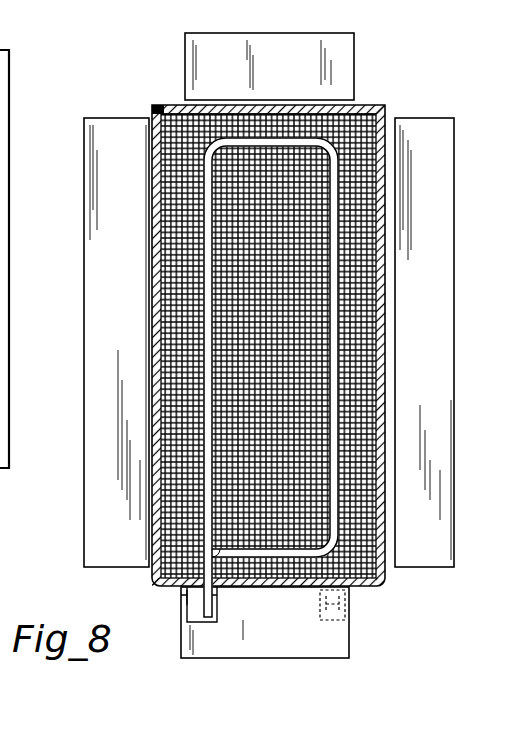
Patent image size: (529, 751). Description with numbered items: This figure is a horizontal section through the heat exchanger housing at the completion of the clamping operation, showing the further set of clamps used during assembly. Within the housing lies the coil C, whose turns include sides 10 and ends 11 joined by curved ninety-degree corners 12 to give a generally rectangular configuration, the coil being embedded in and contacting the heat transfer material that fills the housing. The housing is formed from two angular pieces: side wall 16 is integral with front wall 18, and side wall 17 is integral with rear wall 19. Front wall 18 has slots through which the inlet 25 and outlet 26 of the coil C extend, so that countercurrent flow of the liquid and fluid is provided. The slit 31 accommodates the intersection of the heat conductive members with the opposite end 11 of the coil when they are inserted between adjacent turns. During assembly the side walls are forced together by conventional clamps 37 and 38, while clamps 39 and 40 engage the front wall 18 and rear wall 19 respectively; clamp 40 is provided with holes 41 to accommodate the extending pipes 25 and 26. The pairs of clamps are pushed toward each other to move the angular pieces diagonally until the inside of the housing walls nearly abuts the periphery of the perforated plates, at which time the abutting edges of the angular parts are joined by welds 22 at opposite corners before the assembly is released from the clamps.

The sides 10 is at (203, 357).
The ends 11 is at (268, 344).
The curved corners 12 is at (205, 142).
The side wall 16 is at (152, 478).
The side wall 17 is at (377, 385).
The front wall 18 is at (243, 586).
The rear wall 19 is at (210, 106).
The welds 22 is at (260, 345).
The inlet 25 is at (318, 628).
The outlet 26 is at (200, 620).
The slit 31 is at (272, 128).
The clamp 37 is at (131, 311).
The clamp 38 is at (428, 311).
The clamp 39 is at (350, 70).
The clamp 40 is at (345, 652).
The holes 41 is at (188, 605).
The coil C is at (197, 222).